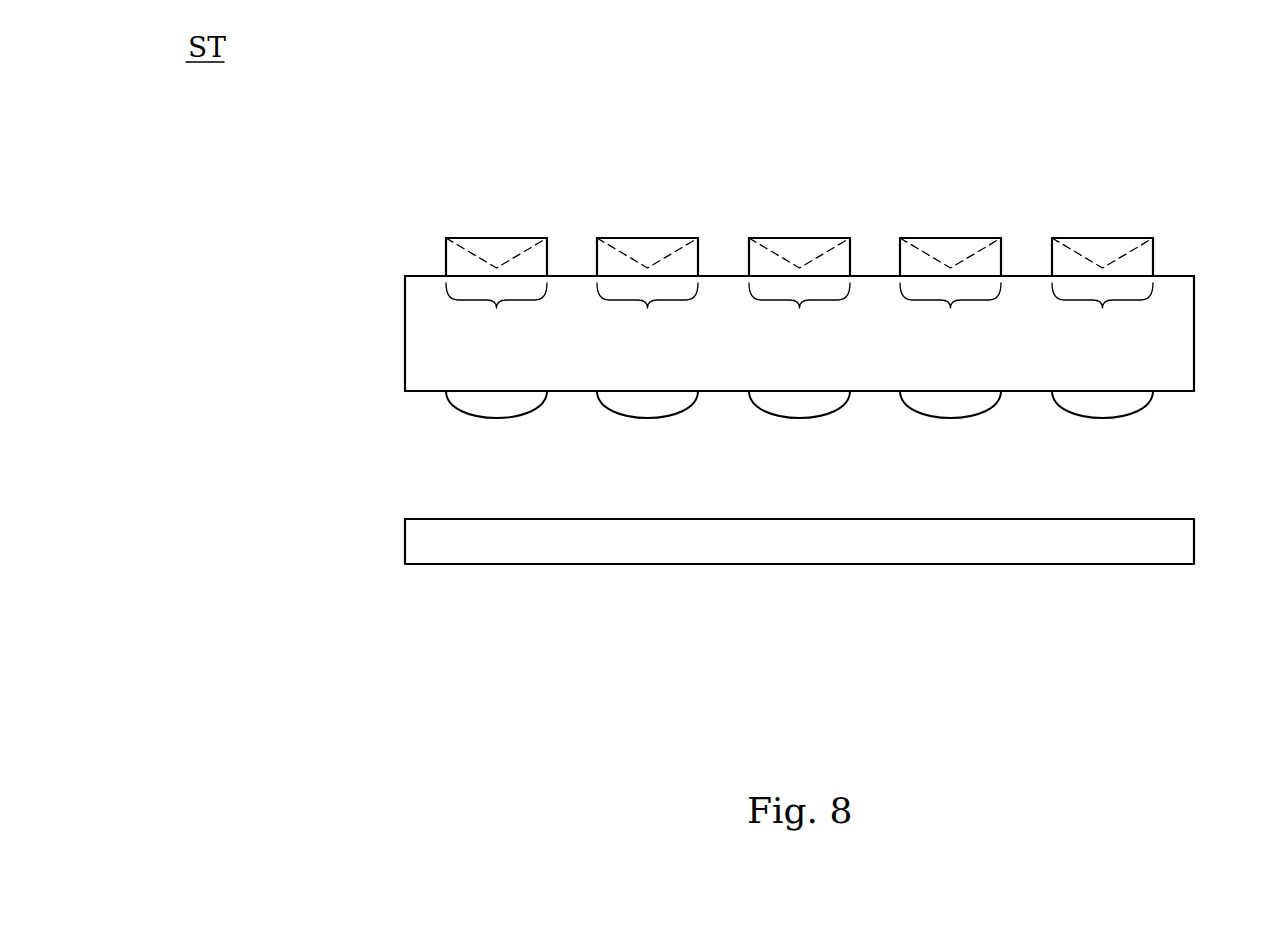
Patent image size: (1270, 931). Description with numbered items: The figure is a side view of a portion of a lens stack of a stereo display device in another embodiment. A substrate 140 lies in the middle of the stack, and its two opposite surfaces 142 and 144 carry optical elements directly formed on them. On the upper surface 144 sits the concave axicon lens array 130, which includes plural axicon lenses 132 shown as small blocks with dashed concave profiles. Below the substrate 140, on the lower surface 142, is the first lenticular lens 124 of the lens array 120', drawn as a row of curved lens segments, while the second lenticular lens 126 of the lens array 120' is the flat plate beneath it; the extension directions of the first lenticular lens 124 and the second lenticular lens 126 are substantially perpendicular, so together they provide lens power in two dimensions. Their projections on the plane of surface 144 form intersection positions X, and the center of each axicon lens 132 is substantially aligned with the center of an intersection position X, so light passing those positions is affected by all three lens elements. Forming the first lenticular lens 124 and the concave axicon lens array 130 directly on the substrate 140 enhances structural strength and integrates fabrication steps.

The lens array 120' is at (720, 477).
The first lenticular lens 124 is at (463, 402).
The second lenticular lens 126 is at (758, 536).
The concave axicon lens array 130 is at (799, 190).
The axicon lenses 132 is at (790, 160).
The substrate 140 is at (741, 333).
The surface of the substrate 142 is at (423, 392).
The surface of the substrate 144 is at (422, 276).